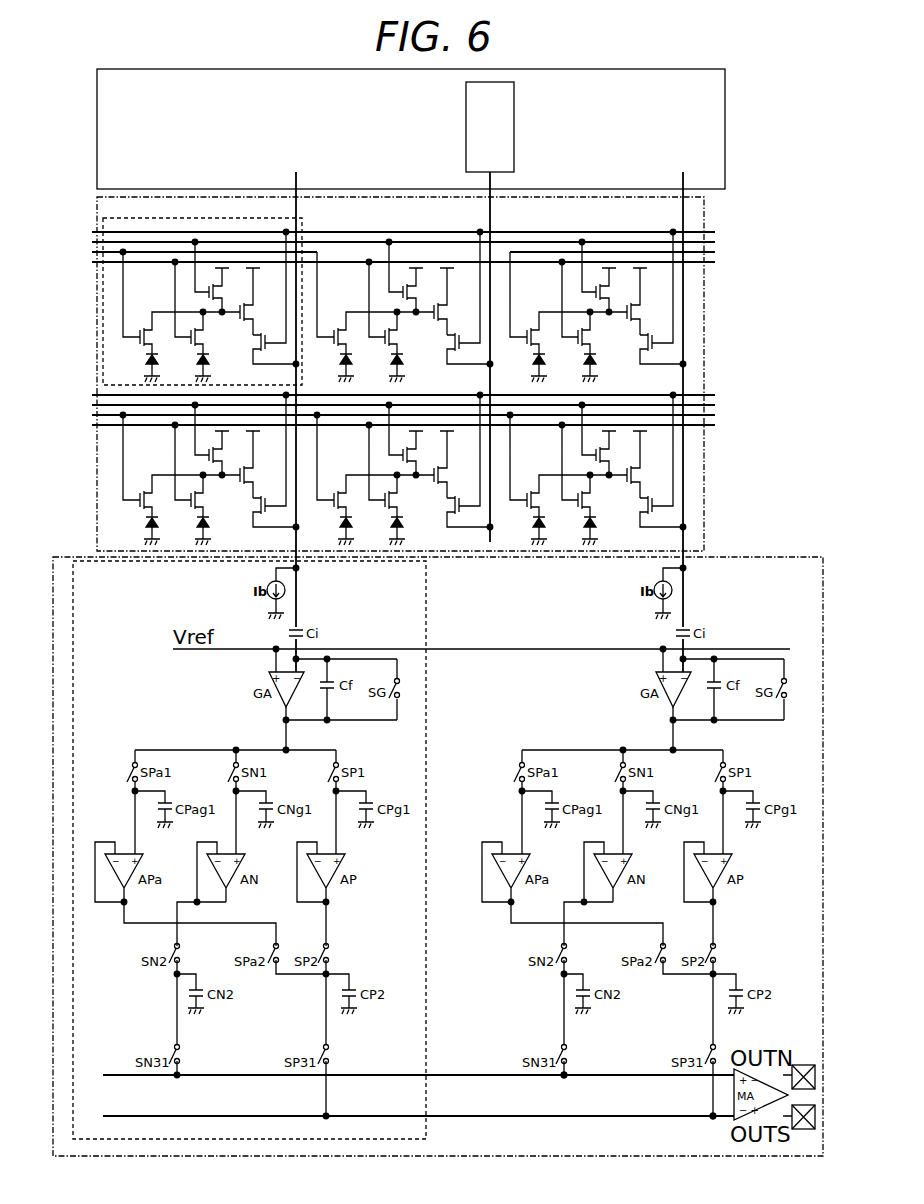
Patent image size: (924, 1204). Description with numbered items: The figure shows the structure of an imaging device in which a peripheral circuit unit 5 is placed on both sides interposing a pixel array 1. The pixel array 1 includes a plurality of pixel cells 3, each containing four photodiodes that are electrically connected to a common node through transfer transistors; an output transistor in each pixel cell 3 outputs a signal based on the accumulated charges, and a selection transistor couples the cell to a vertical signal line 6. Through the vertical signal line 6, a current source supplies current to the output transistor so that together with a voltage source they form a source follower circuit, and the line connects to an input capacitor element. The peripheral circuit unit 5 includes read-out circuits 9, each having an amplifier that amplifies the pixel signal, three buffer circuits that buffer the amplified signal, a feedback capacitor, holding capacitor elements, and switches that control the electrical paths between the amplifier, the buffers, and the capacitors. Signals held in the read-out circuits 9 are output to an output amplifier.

The pixel array 1 is at (400, 374).
The pixel cell 3 is at (304, 224).
The peripheral circuit unit 5 is at (725, 141).
The vertical signal line 6 is at (298, 592).
The read-out circuit 9 is at (514, 101).